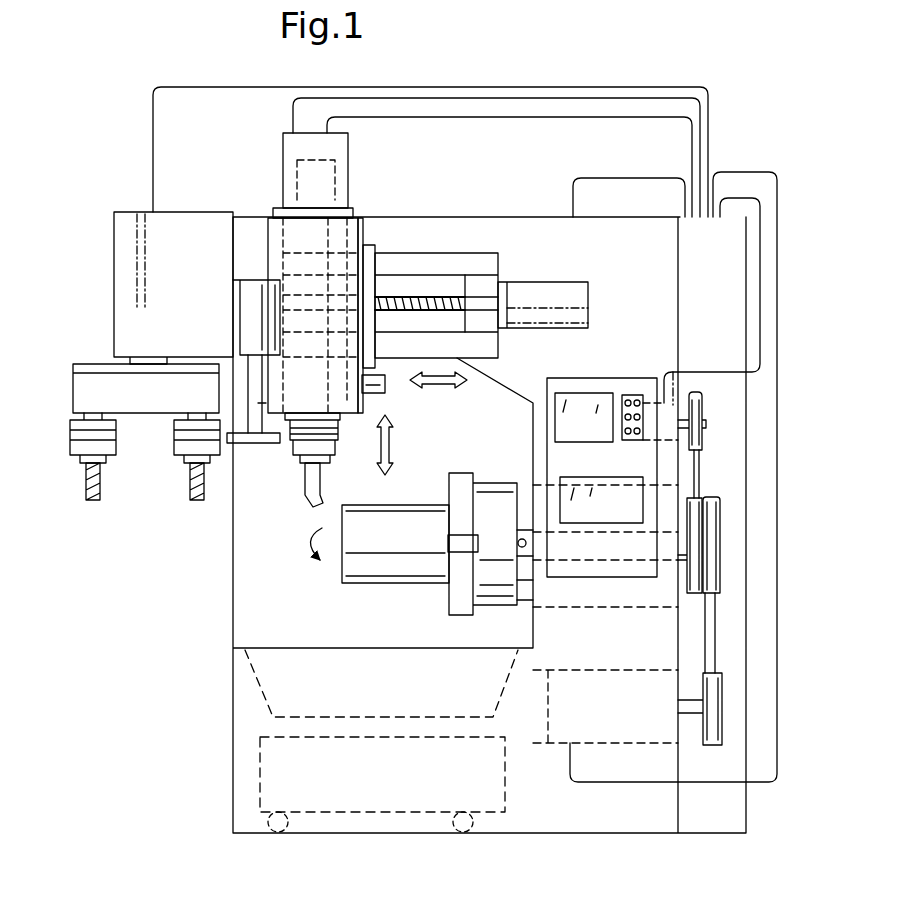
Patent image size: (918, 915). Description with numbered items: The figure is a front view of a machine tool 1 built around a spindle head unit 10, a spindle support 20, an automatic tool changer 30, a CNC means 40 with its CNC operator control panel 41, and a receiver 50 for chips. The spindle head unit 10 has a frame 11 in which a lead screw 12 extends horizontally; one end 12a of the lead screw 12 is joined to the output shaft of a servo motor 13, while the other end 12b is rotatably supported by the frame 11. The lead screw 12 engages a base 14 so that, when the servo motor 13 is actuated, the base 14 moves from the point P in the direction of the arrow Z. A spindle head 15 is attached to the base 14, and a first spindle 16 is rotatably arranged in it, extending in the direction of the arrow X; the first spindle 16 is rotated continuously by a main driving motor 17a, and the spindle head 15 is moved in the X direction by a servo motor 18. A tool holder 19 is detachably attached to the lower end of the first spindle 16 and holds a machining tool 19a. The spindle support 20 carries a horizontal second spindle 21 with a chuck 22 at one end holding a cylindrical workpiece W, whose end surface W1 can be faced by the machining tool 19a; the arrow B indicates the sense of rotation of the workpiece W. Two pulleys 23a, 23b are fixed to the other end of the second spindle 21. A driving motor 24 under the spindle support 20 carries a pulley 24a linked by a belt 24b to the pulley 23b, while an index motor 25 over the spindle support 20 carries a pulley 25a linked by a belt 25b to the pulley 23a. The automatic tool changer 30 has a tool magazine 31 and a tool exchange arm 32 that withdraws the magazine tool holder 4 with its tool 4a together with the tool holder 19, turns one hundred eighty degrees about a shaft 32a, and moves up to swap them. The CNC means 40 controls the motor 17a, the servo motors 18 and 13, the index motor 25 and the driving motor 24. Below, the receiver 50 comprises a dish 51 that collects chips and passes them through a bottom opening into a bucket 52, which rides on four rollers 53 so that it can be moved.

The machine tool 1 is at (214, 608).
The tool holder 4 is at (176, 447).
The drill 4a is at (193, 497).
The spindle head unit 10 is at (362, 155).
The frame 11 is at (475, 252).
The lead screw 12 is at (420, 297).
The one end of the lead screw 12a is at (467, 300).
The other end of the lead screw 12b is at (305, 295).
The servo motor 13 is at (590, 296).
The base 14 is at (372, 250).
The spindle head 15 is at (361, 236).
The first spindle 16 is at (370, 393).
The main driving motor 17a is at (288, 141).
The servo motor 18 is at (298, 177).
The tool holder 19 is at (332, 456).
The machining tool 19a is at (305, 490).
The spindle support 20 is at (623, 636).
The second spindle 21 is at (541, 608).
The chuck 22 is at (466, 593).
The pulley 23a is at (718, 600).
The pulley 23b is at (703, 532).
The driving motor 24 is at (553, 742).
The pulley 24a is at (722, 706).
The belt 24b is at (716, 648).
The index motor 25 is at (672, 400).
The pulley 25a is at (703, 407).
The belt 25b is at (700, 475).
The automatic tool changer 30 is at (110, 344).
The tool magazine 31 is at (78, 388).
The tool exchange arm 32 is at (266, 444).
The shaft 32a is at (252, 378).
The CNC means 40 is at (733, 305).
The CNC operator control panel 41 is at (594, 378).
The receiver 50 is at (216, 746).
The dish 51 is at (257, 672).
The bucket 52 is at (260, 782).
The rollers 53 is at (462, 833).
The point P is at (264, 208).
The workpiece W is at (392, 584).
The end surface W1 is at (341, 574).
The rotation direction B is at (305, 542).
The arrow X is at (393, 447).
The arrow Z is at (440, 388).